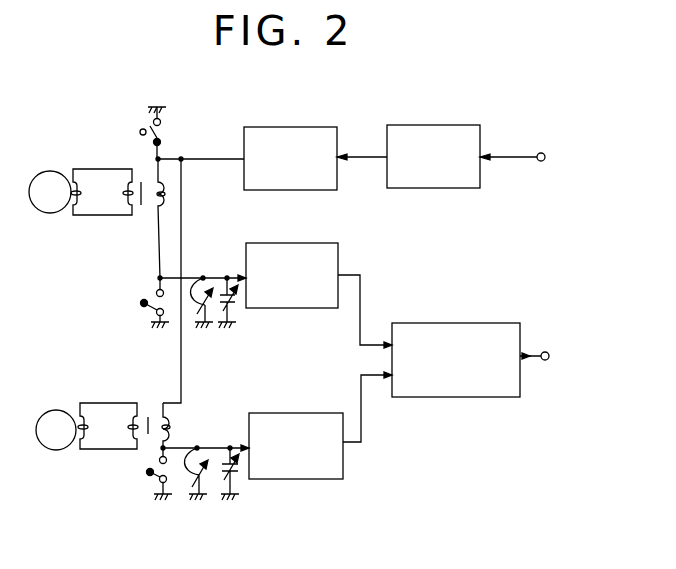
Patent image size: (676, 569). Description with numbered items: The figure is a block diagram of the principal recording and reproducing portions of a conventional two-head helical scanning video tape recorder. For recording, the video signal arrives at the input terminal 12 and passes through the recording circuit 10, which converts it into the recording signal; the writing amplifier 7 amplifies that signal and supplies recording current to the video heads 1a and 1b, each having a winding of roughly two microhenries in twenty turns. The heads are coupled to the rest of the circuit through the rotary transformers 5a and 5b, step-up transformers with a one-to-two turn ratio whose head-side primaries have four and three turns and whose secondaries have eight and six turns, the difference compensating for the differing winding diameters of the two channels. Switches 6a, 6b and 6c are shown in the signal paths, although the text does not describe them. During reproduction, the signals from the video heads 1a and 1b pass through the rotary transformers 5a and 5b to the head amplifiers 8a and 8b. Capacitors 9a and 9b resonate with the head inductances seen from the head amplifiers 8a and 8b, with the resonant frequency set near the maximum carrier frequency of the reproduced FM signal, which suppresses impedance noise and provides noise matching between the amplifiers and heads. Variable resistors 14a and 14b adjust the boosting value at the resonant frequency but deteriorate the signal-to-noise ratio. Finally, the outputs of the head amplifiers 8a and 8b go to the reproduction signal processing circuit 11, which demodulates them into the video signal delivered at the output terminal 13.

The video head 1a is at (52, 213).
The video head 1b is at (53, 409).
The rotary transformer 5a is at (142, 207).
The rotary transformer 5b is at (148, 411).
The switch 6a is at (161, 133).
The switch 6b is at (153, 292).
The switch 6c is at (153, 478).
The writing amplifier 7 is at (282, 125).
The head amplifier 8a is at (320, 308).
The head amplifier 8b is at (320, 480).
The capacitor 9a is at (240, 308).
The capacitor 9b is at (220, 477).
The recording circuit 10 is at (441, 125).
The reproduction signal processing circuit 11 is at (467, 322).
The input terminal 12 is at (545, 151).
The output terminal 13 is at (549, 352).
The variable resistor 14a is at (195, 272).
The variable resistor 14b is at (192, 443).